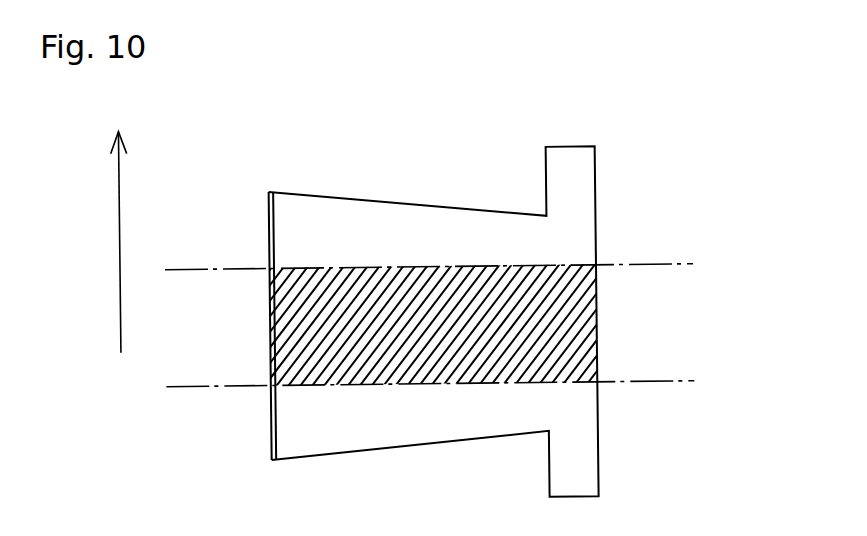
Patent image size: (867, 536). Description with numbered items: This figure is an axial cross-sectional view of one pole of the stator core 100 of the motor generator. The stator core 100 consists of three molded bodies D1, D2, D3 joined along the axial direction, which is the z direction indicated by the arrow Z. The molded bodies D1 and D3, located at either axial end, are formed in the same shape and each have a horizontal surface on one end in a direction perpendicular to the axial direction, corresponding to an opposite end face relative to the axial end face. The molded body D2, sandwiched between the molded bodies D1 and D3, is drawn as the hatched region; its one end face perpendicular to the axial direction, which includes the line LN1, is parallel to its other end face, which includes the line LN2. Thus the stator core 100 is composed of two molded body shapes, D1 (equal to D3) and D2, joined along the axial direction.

The stator core 100 is at (722, 138).
The molded body D1 is at (582, 211).
The molded body D2 is at (585, 324).
The molded body D3 is at (585, 439).
The line LN1 is at (668, 265).
The line LN2 is at (668, 382).
The z direction Z is at (119, 230).